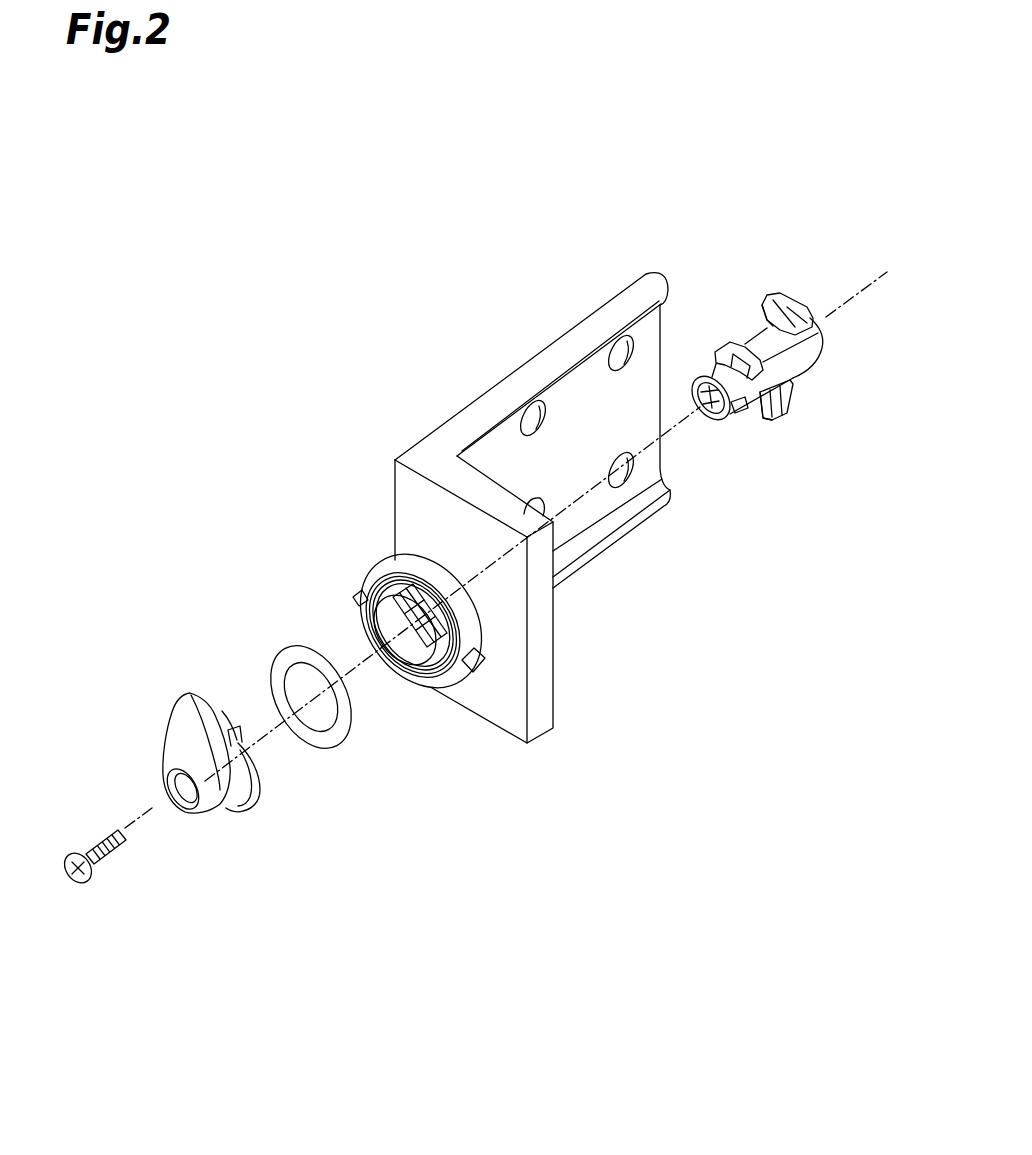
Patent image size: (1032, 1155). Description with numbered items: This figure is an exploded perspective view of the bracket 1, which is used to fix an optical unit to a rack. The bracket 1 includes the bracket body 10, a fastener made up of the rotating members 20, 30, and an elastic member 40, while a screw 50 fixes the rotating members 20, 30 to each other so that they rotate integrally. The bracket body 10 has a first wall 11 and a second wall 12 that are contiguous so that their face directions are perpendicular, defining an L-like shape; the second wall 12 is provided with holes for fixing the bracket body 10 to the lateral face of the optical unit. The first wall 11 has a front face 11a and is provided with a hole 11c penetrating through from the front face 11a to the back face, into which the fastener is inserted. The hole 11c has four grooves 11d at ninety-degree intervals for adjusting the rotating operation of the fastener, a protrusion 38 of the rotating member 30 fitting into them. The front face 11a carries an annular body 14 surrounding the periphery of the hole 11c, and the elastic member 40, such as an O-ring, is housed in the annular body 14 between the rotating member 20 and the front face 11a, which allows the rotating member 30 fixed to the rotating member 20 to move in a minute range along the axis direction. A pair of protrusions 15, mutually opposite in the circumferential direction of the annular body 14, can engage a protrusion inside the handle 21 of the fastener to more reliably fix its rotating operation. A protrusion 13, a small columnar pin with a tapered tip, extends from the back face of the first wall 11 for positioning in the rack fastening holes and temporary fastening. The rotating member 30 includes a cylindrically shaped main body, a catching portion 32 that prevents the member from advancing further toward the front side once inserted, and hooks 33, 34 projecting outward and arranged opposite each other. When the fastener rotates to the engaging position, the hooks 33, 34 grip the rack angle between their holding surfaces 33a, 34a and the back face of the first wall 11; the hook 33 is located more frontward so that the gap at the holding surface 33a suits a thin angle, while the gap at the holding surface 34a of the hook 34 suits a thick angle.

The bracket 1 is at (377, 297).
The bracket body 10 is at (572, 320).
The first wall 11 is at (516, 632).
The front face 11a is at (515, 654).
The hole 11c is at (388, 645).
The grooves 11d is at (364, 613).
The second wall 12 is at (655, 331).
The protrusion 13 is at (537, 500).
The annular body 14 is at (393, 556).
The pair of protrusions 15 is at (357, 598).
The rotating member 20 is at (166, 709).
The handle 21 is at (178, 743).
The rotating member 30 is at (820, 372).
The catching portion 32 is at (821, 345).
The hook 33 is at (798, 400).
The holding surface 33a is at (767, 412).
The hook 34 is at (784, 309).
The holding surface 34a is at (760, 320).
The protrusion 38 is at (718, 348).
The elastic member 40 is at (283, 643).
The screw 50 is at (105, 871).